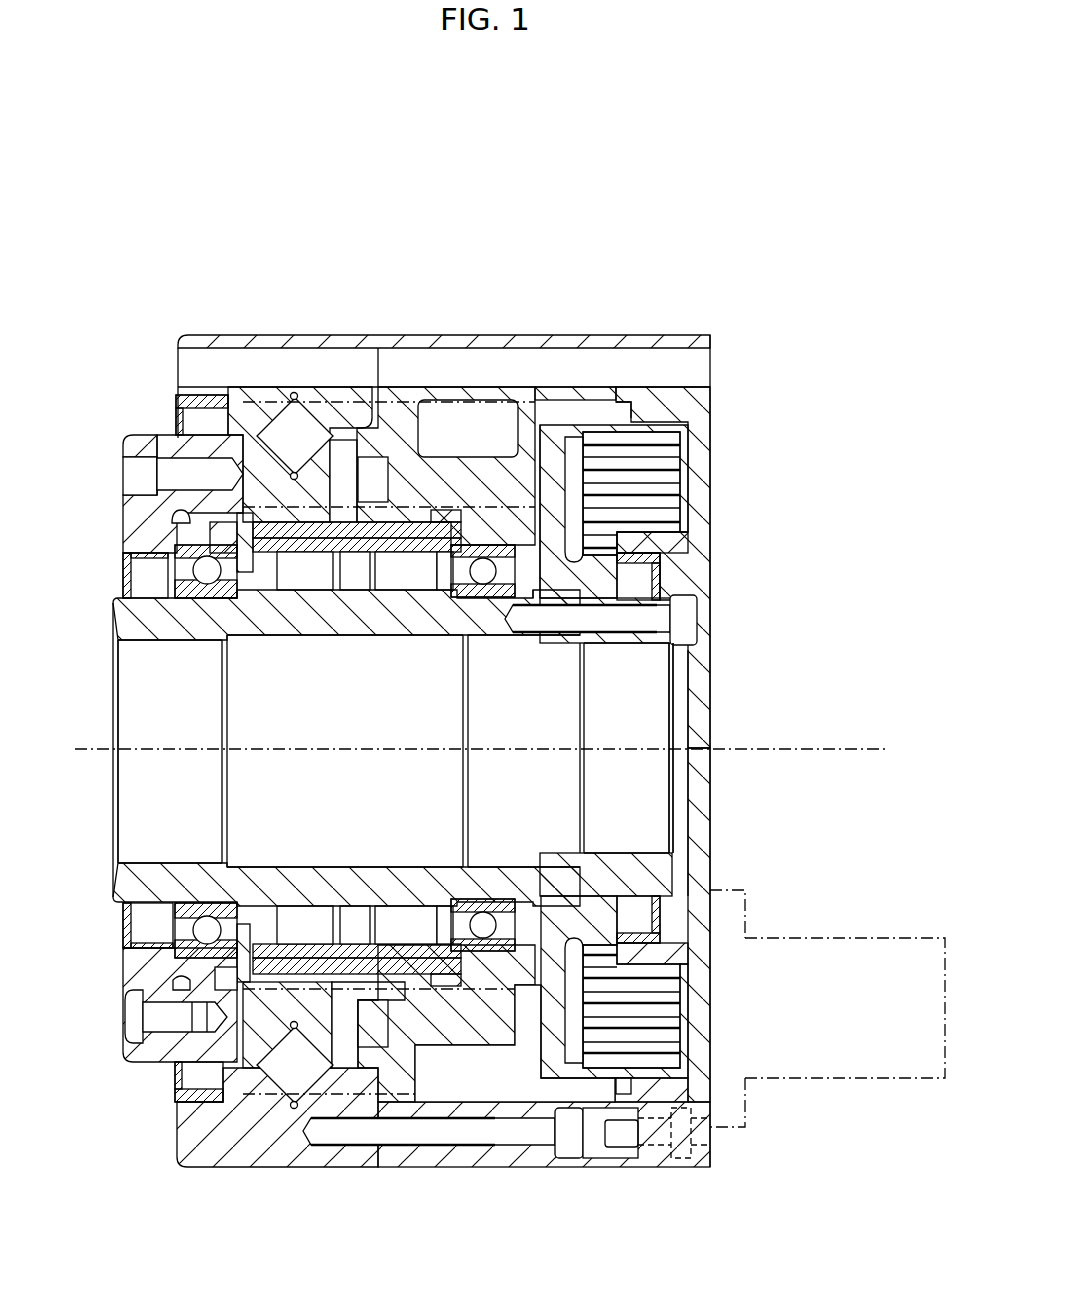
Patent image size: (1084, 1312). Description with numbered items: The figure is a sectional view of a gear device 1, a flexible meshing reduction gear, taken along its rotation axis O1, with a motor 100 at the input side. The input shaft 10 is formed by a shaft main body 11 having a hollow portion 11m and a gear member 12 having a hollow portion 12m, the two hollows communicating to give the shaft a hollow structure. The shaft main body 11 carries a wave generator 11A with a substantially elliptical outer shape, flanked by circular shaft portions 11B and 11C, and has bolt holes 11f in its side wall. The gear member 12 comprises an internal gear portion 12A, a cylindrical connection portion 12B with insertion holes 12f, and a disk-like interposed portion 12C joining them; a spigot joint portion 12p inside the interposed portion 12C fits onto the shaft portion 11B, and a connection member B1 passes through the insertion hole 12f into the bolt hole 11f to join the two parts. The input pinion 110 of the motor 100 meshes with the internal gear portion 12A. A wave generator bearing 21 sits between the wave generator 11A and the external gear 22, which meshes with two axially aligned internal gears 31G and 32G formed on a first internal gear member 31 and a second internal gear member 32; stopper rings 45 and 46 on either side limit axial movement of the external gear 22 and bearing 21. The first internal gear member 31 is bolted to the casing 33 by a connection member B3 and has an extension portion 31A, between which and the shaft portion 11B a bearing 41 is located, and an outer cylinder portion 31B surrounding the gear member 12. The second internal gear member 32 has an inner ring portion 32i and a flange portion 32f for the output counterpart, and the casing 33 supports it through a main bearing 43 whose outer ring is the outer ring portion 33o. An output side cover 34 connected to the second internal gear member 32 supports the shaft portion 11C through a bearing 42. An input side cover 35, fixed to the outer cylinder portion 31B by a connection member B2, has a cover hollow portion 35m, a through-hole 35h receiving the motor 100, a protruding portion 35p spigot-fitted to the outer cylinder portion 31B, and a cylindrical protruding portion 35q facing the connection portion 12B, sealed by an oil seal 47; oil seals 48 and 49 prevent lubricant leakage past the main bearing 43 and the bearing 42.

The gear device 1 is at (745, 206).
The input shaft 10 is at (785, 795).
The shaft main body 11 is at (562, 773).
The wave generator 11A is at (253, 866).
The shaft portion 11B is at (455, 866).
The shaft portion 11C is at (120, 866).
The bolt hole 11f is at (556, 618).
The hollow portion 11m is at (146, 708).
The gear member 12 is at (640, 823).
The internal gear portion 12A is at (632, 428).
The connection portion 12B is at (673, 643).
The interposed portion 12C is at (530, 510).
The insertion hole 12f is at (660, 612).
The hollow portion 12m is at (662, 726).
The spigot joint portion 12p is at (612, 508).
The wave generator bearing 21 is at (447, 592).
The external gear 22 is at (300, 528).
The first internal gear member 31 is at (400, 345).
The extension portion 31A is at (488, 505).
The outer cylinder portion 31B is at (598, 340).
The internal gear 31G is at (395, 500).
The second internal gear member 32 is at (163, 435).
The internal gear 32G is at (292, 515).
The flange portion 32f is at (192, 500).
The inner ring portion 32i is at (228, 445).
The casing 33 is at (303, 385).
The outer ring portion 33o is at (302, 394).
The output side cover 34 is at (128, 437).
The input side cover 35 is at (710, 336).
The through-hole 35h is at (706, 1050).
The cover hollow portion 35m is at (699, 774).
The protruding portion 35p is at (628, 408).
The cylindrical protruding portion 35q is at (643, 544).
The bearing 41 is at (485, 578).
The bearing 42 is at (207, 572).
The main bearing 43 is at (290, 428).
The stopper ring 45 is at (447, 905).
The stopper ring 46 is at (245, 906).
The oil seal 47 is at (663, 575).
The oil seal 48 is at (183, 395).
The oil seal 49 is at (125, 578).
The motor 100 is at (872, 1080).
The input pinion 110 is at (688, 985).
The connection member B1 is at (683, 620).
The connection member B2 is at (713, 1142).
The connection member B3 is at (572, 1143).
The rotation axis O1 is at (505, 750).